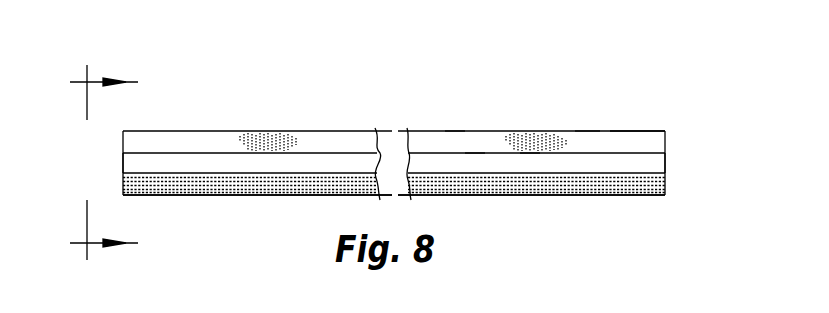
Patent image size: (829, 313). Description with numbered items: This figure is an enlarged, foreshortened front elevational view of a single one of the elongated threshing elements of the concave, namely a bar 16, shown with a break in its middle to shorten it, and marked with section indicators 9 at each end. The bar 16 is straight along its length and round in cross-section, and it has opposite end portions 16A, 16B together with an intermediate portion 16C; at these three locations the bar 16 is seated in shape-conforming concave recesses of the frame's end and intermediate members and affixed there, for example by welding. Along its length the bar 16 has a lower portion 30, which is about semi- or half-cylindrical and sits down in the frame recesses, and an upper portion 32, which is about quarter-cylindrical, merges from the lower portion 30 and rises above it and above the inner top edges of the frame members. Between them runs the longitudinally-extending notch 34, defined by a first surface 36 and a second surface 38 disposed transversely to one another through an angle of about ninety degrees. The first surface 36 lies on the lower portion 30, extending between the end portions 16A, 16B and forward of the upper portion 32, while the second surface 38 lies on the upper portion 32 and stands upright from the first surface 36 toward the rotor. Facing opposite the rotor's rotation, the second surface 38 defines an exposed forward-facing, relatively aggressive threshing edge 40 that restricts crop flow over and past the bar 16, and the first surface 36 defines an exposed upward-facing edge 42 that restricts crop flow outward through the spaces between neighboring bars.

The section line of FIG. 9 is at (62, 92).
The elongated threshing element bar 16 is at (445, 130).
The end portion 16A is at (665, 160).
The end portion 16B is at (123, 161).
The intermediate portion 16C is at (456, 130).
The lower portion 30 is at (223, 166).
The upper portion 32 is at (208, 143).
The longitudinally-extending notch 34 is at (625, 140).
The first surface 36 is at (530, 153).
The second surface 38 is at (585, 142).
The threshing edge 40 is at (523, 152).
The upward-facing edge 42 is at (475, 150).